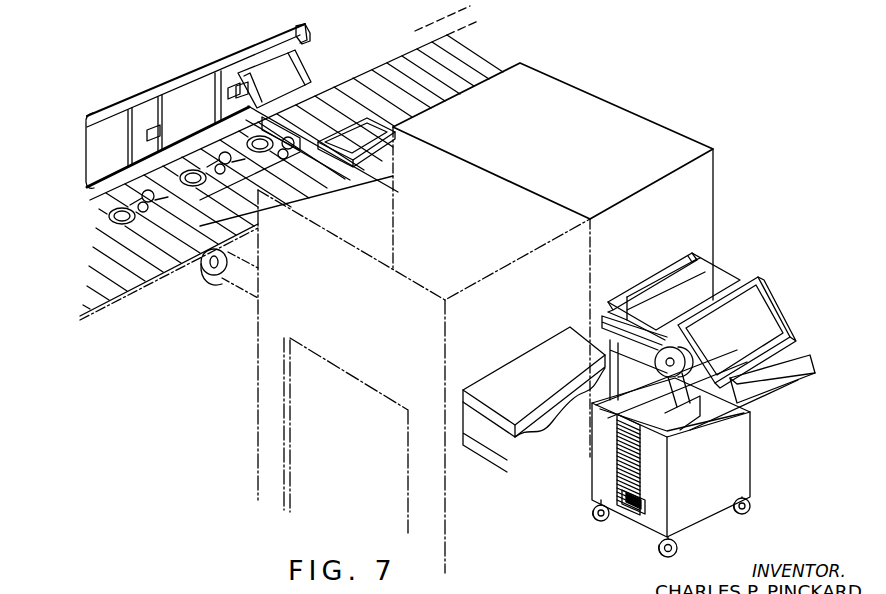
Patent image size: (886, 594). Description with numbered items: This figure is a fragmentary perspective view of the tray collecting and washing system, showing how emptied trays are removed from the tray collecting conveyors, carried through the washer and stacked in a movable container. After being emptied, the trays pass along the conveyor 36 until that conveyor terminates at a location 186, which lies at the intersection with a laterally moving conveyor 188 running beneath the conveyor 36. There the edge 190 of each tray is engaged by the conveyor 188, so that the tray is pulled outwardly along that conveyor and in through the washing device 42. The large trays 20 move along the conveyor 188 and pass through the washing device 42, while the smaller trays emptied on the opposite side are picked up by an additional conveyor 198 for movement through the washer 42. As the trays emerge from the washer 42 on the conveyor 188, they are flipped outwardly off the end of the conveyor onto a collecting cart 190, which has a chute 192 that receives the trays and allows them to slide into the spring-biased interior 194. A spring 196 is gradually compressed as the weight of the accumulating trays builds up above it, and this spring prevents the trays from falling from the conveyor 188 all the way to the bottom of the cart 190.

The large tray 20 is at (272, 62).
The conveyor 36 is at (194, 66).
The washing device 42 is at (570, 98).
The location 186 is at (308, 43).
The laterally moving conveyor 188 is at (343, 88).
The collecting cart 190 is at (290, 97).
The chute 192 is at (810, 380).
The spring-biased interior 194 is at (617, 472).
The spring 196 is at (628, 517).
The additional conveyor 198 is at (535, 405).